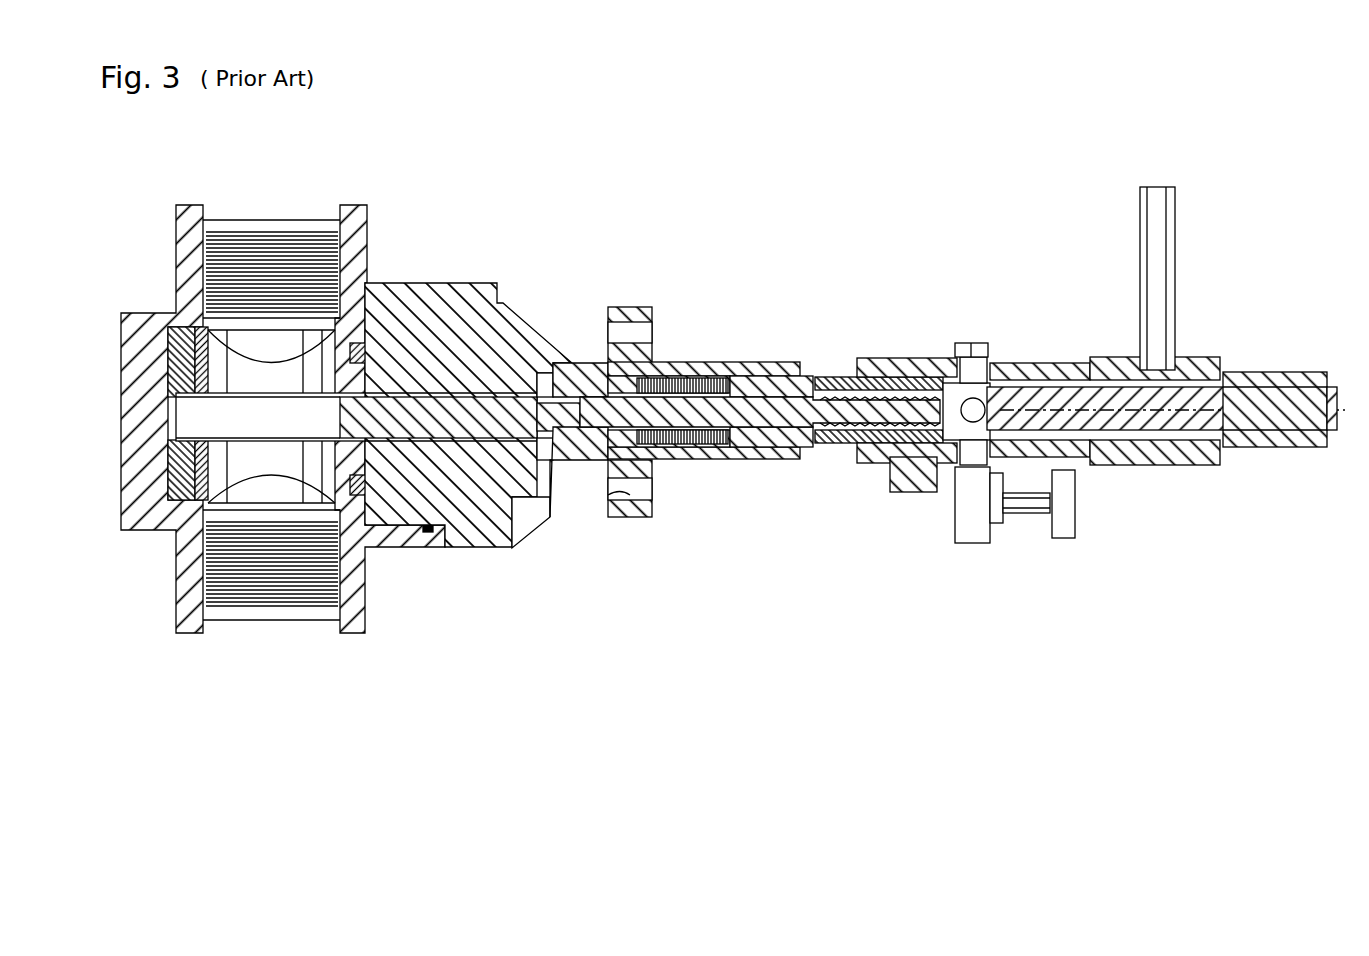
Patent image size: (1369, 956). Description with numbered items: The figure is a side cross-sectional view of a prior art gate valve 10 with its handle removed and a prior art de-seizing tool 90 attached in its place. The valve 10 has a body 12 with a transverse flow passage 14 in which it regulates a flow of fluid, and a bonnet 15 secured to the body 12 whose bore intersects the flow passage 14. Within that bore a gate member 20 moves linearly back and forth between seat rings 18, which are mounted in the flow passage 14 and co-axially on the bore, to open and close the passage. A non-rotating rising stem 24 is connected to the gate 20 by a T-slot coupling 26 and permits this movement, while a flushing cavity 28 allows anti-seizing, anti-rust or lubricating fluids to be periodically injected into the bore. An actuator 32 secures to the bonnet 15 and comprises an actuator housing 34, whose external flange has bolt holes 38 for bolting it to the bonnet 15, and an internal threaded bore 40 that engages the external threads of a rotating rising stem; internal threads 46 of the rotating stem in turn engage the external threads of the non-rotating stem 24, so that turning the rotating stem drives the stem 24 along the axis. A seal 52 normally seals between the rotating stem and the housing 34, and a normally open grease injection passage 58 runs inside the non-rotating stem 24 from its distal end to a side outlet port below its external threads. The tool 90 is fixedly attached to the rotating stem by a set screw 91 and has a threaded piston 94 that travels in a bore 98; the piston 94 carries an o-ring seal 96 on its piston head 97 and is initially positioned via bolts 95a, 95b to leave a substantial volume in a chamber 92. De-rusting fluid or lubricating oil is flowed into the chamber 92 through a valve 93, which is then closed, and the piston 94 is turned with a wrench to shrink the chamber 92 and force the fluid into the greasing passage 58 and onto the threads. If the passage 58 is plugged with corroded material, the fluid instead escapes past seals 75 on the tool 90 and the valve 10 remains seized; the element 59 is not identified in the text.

The valve 10 is at (402, 205).
The body 12 is at (357, 568).
The transverse flow passage 14 is at (338, 580).
The bonnet 15 is at (467, 283).
The seat rings 18 is at (335, 372).
The gate member 20 is at (458, 432).
The non-rotating rising stem 24 is at (757, 397).
The T-slot coupling 26 is at (548, 373).
The flushing cavity 28 is at (548, 497).
The actuator 32 is at (675, 318).
The actuator housing 34 is at (619, 307).
The bolt holes 38 is at (607, 500).
The internal threaded bore 40 is at (693, 375).
The internal threads 46 is at (840, 443).
The seal 52 is at (795, 377).
The grease injection passage 58 is at (886, 370).
The lever 59 is at (1172, 212).
The seals 75 is at (852, 362).
The de-seizing tool 90 is at (1008, 288).
The set screw 91 is at (915, 492).
The chamber 92 is at (948, 380).
The valve 93 is at (990, 530).
The piston 94 is at (1115, 400).
The bolt 95a is at (1250, 372).
The bolt 95b is at (1298, 372).
The o-ring seal 96 is at (990, 357).
The piston head 97 is at (1020, 378).
The bore 98 is at (1060, 375).